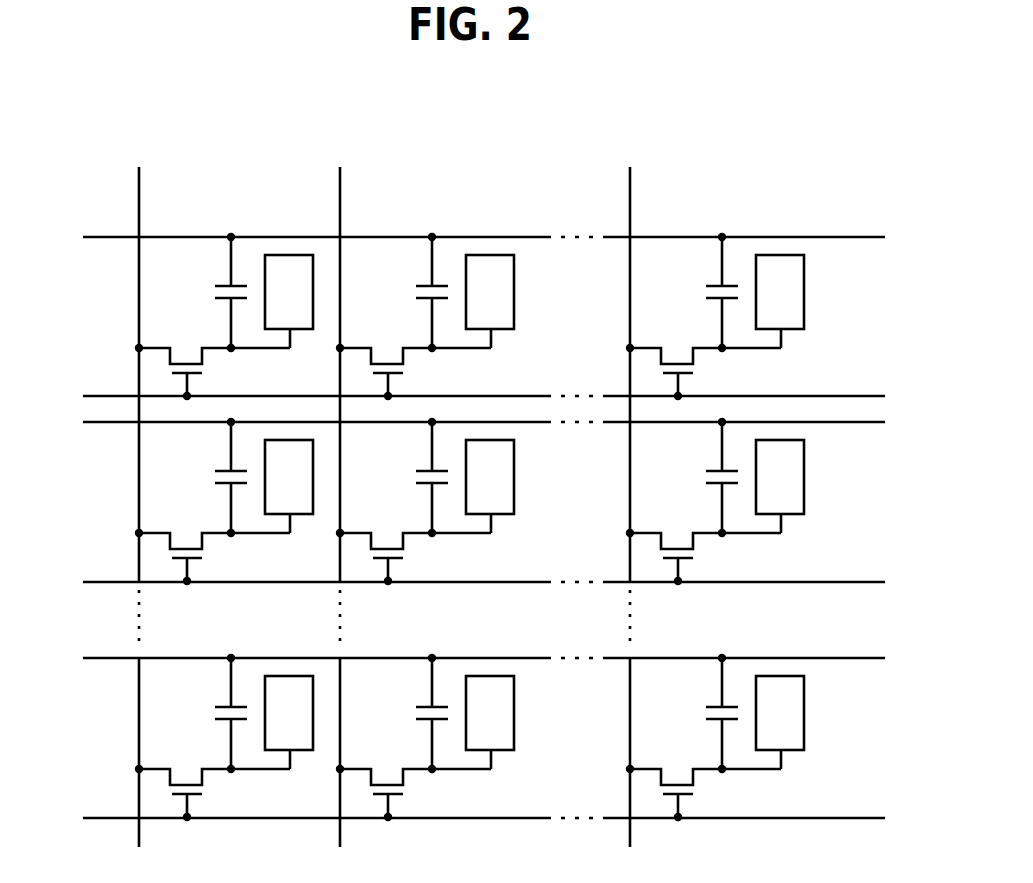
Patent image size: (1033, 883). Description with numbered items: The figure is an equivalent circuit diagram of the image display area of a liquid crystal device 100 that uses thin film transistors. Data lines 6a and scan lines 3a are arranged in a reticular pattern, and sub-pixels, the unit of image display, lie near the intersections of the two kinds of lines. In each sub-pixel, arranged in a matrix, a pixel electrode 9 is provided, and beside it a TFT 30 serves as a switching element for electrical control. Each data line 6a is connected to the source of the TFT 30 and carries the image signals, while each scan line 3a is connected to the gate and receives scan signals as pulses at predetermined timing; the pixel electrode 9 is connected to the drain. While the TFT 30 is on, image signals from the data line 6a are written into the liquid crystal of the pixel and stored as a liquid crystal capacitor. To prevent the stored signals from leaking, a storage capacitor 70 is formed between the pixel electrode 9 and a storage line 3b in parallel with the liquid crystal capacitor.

The electro-optical device (liquid crystal device) pixel circuit 100 is at (882, 87).
The data line 6a is at (139, 213).
The storage line 3b is at (98, 237).
The scan line 3a is at (97, 396).
The storage capacitor 70 is at (201, 287).
The pixel electrode 9 is at (313, 310).
The TFT 30 is at (226, 373).